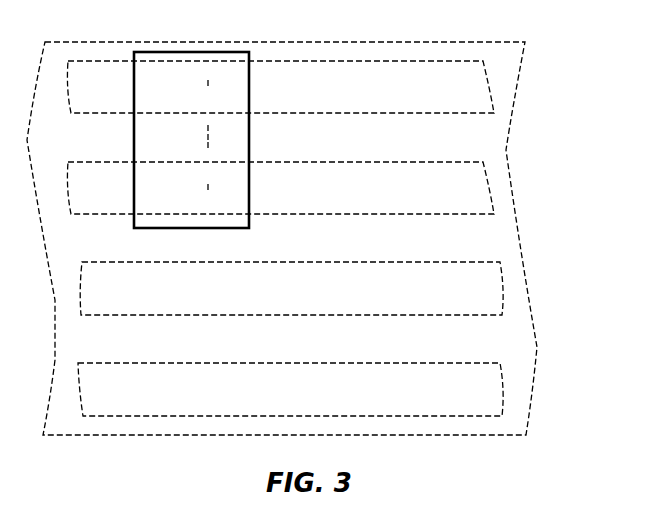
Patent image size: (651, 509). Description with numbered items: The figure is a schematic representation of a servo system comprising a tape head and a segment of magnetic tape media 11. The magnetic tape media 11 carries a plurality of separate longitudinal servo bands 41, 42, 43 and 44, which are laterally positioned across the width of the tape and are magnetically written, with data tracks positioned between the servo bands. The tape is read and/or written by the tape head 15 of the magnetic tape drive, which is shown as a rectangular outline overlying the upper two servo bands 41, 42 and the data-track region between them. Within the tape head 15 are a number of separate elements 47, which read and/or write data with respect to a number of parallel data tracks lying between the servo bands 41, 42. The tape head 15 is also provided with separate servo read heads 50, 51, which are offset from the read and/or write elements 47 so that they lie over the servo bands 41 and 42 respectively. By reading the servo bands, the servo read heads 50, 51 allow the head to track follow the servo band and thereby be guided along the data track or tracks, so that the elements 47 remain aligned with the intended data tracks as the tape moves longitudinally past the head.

The magnetic tape media 11 is at (449, 50).
The tape head 15 is at (218, 51).
The servo band 41 is at (480, 86).
The servo band 42 is at (480, 187).
The servo band 43 is at (490, 285).
The servo band 44 is at (490, 385).
The read and/or write elements 47 is at (208, 128).
The servo read head 50 is at (208, 83).
The servo read head 51 is at (208, 187).